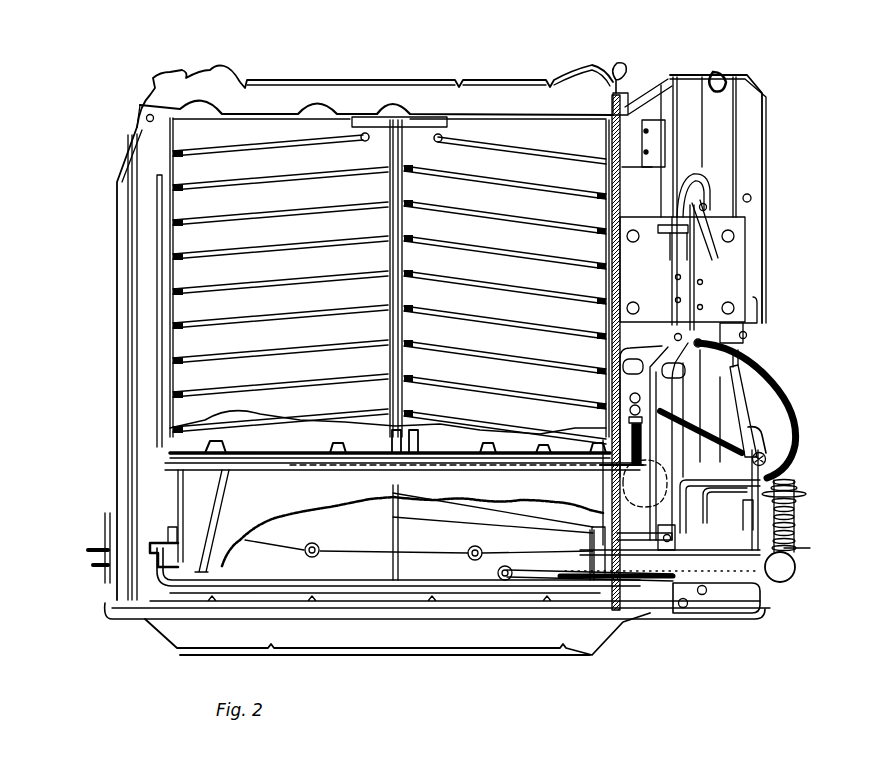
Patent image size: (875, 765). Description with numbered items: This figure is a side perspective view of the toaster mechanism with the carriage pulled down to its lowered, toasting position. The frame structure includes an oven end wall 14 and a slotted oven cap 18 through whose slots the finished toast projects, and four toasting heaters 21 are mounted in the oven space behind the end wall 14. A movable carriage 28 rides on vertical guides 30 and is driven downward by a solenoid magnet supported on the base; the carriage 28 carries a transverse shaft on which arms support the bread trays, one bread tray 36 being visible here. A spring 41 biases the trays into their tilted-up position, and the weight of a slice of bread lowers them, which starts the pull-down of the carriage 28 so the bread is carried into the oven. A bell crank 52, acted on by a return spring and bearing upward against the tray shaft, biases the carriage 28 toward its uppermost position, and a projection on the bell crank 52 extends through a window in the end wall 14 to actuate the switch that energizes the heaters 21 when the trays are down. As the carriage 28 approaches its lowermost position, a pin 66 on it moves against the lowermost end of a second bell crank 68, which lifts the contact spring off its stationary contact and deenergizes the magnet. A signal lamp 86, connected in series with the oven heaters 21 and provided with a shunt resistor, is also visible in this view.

The oven end wall 14 is at (127, 253).
The slotted oven cap 18 is at (279, 98).
The vertical guides 30 is at (687, 95).
The bread tray 36 is at (167, 459).
The bell crank 52 is at (197, 490).
The toasting heaters 21 is at (328, 526).
The bell crank 68 is at (743, 383).
The spring 41 is at (740, 430).
The movable carriage 28 is at (767, 443).
The pin 66 is at (767, 462).
The signal lamp 86 is at (782, 575).